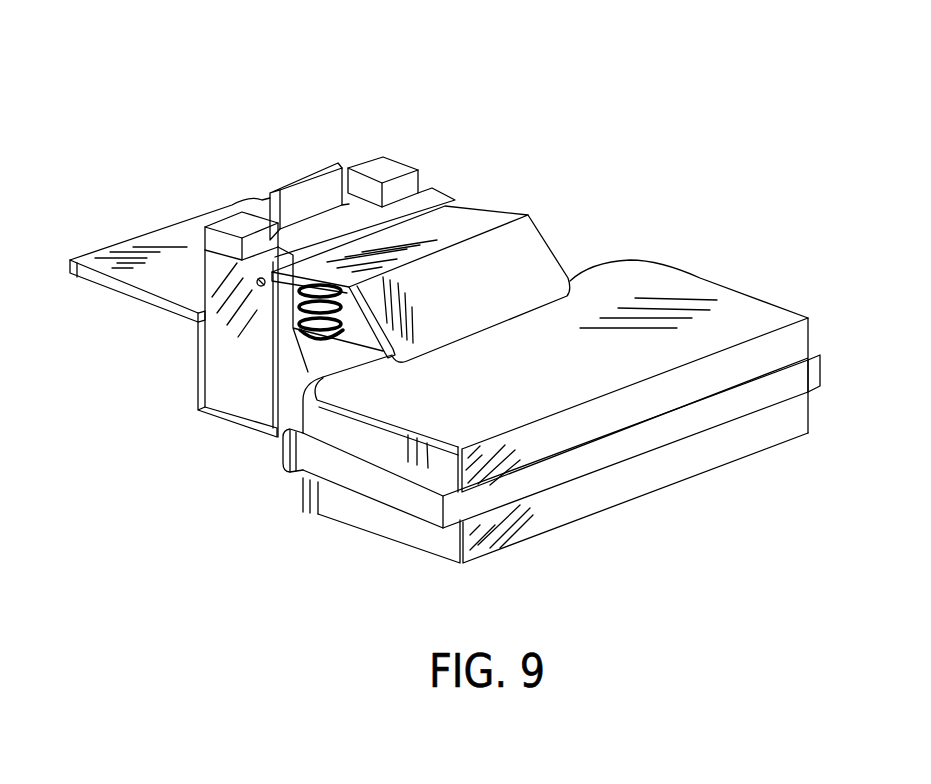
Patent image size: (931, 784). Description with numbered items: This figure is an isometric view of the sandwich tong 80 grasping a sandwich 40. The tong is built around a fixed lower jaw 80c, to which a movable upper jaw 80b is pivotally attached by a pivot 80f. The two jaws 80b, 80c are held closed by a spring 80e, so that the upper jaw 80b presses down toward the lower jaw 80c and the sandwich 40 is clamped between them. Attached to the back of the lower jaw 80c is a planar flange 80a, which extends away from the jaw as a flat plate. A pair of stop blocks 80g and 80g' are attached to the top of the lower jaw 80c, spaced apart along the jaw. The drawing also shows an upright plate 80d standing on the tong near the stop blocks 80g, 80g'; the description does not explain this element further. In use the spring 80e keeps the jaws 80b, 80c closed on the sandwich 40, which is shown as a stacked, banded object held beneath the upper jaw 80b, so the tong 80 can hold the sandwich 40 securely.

The sandwich tong 80 is at (472, 174).
The planar flange 80a is at (148, 250).
The movable upper jaw 80b is at (510, 297).
The fixed lower jaw 80c is at (260, 350).
The guide plate 80d is at (308, 175).
The spring 80e is at (320, 348).
The pivot 80f is at (257, 286).
The stop block 80g is at (178, 282).
The stop block 80g' is at (390, 135).
The sandwich 40 is at (612, 482).